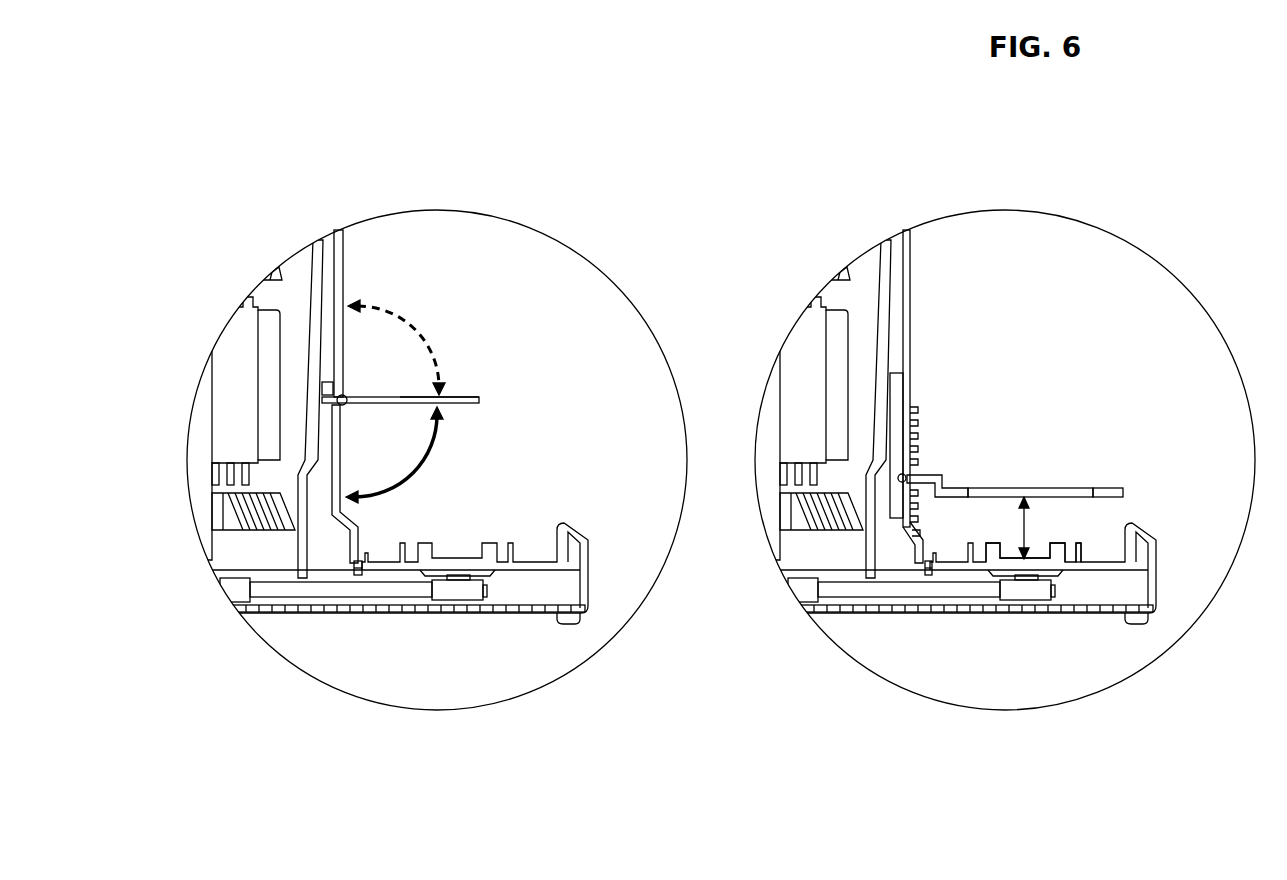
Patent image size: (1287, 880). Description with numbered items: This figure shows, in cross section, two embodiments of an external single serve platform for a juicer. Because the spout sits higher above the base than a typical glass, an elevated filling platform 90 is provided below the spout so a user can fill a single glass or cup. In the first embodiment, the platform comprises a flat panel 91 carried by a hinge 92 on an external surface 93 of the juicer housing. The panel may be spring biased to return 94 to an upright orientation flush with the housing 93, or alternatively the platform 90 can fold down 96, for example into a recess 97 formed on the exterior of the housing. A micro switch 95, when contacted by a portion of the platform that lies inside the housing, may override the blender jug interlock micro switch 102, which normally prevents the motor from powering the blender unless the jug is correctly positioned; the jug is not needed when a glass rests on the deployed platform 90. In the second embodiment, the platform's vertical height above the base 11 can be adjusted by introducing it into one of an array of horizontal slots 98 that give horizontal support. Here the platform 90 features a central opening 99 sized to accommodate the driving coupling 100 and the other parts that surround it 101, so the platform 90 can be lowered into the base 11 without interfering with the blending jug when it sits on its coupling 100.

The base 11 is at (1143, 533).
The elevated filling platform 90 is at (466, 397).
The flat panel 91 is at (450, 397).
The hinge 92 is at (346, 398).
The external surface of the juicer housing 93 is at (342, 263).
The spring-biased return 94 is at (423, 337).
The micro switch 95 is at (325, 388).
The fold down movement 96 is at (432, 452).
The recess 97 is at (348, 498).
The horizontal slots 98 is at (918, 418).
The central opening 99 is at (1013, 488).
The driving coupling 100 is at (996, 562).
The parts surrounding the driving coupling 101 is at (1082, 549).
The blender jug interlock micro switch 102 is at (358, 575).